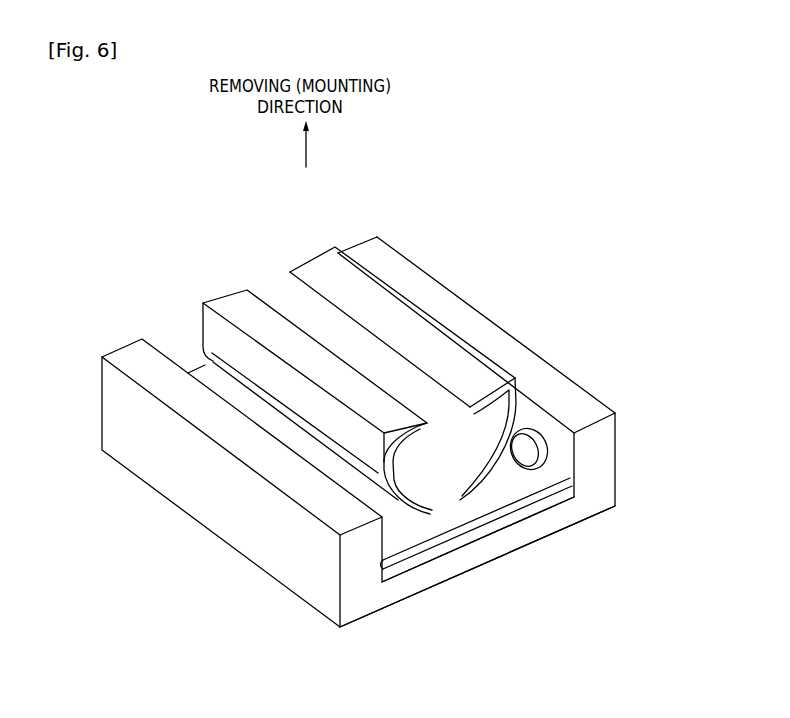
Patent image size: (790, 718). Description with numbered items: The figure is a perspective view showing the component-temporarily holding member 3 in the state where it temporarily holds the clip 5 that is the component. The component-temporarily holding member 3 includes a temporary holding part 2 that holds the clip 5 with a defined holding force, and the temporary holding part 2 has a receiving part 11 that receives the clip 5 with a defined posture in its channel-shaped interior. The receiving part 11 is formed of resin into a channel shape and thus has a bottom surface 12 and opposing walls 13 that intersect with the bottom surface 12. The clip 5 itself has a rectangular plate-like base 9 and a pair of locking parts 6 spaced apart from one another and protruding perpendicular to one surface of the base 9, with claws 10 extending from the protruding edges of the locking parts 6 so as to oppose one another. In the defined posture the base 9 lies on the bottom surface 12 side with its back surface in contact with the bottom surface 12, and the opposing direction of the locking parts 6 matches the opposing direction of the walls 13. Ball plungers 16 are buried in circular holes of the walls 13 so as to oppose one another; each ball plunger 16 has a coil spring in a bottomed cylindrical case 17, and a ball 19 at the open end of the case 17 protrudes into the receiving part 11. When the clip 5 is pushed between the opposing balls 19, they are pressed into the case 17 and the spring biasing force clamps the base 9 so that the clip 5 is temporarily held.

The temporary holding part 2 is at (647, 577).
The component-temporarily holding member 3 is at (582, 313).
The clip 5 is at (166, 272).
The locking parts 6 is at (336, 246).
The base 9 is at (483, 500).
The claws 10 is at (291, 271).
The receiving part 11 is at (166, 314).
The bottom surface 12 is at (399, 571).
The walls 13 is at (458, 318).
The ball plunger 16 is at (539, 427).
The case 17 is at (529, 448).
The ball 19 is at (523, 458).